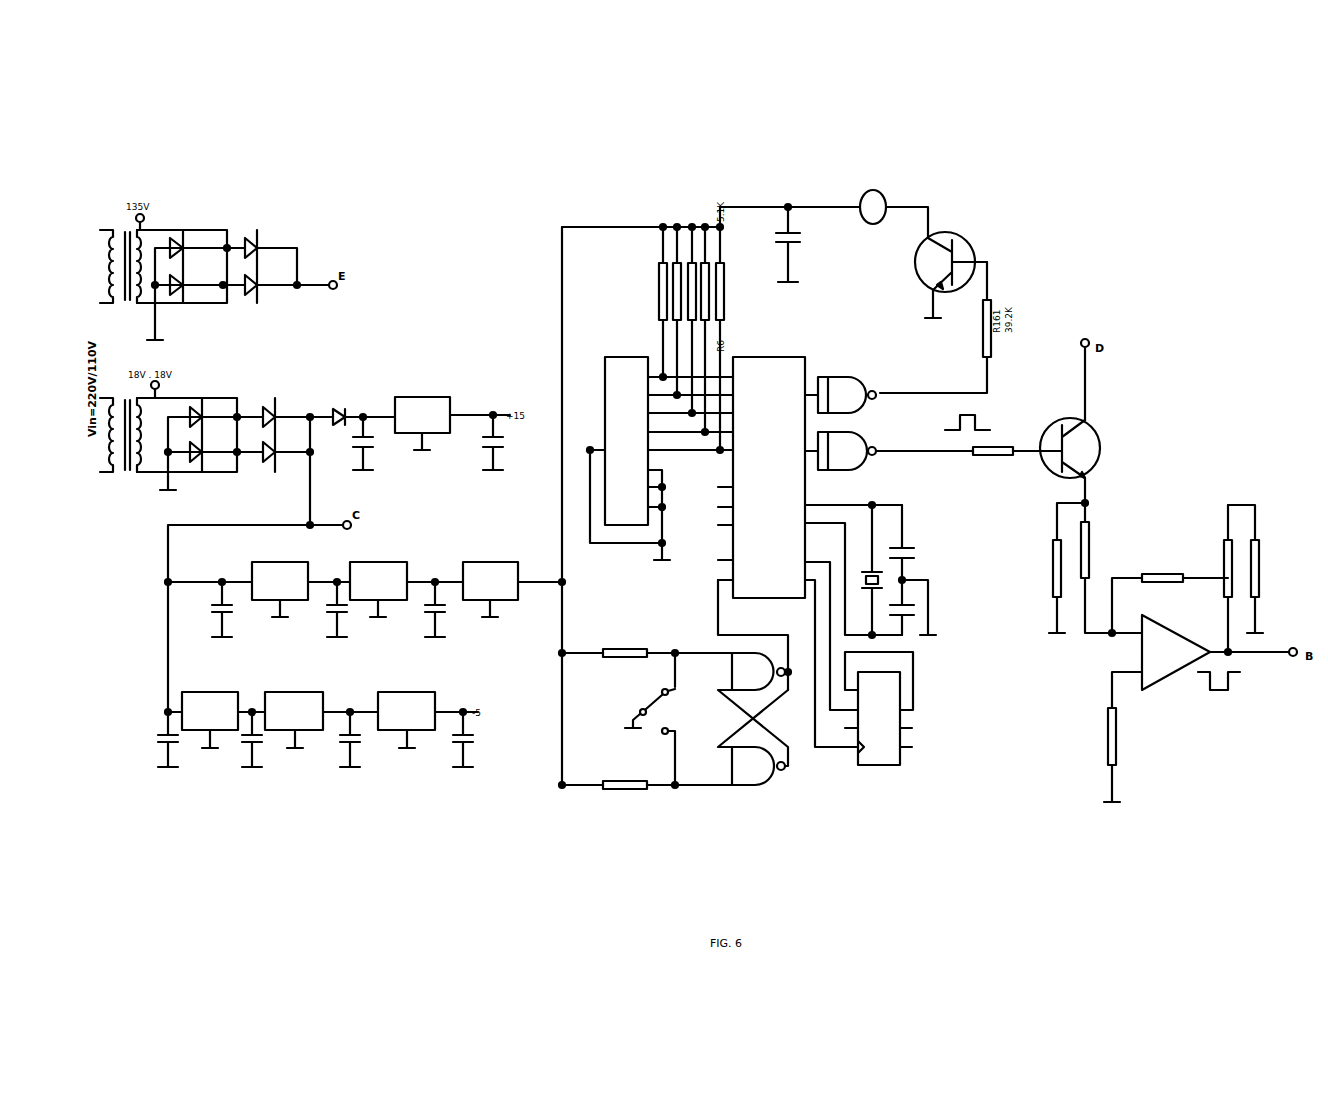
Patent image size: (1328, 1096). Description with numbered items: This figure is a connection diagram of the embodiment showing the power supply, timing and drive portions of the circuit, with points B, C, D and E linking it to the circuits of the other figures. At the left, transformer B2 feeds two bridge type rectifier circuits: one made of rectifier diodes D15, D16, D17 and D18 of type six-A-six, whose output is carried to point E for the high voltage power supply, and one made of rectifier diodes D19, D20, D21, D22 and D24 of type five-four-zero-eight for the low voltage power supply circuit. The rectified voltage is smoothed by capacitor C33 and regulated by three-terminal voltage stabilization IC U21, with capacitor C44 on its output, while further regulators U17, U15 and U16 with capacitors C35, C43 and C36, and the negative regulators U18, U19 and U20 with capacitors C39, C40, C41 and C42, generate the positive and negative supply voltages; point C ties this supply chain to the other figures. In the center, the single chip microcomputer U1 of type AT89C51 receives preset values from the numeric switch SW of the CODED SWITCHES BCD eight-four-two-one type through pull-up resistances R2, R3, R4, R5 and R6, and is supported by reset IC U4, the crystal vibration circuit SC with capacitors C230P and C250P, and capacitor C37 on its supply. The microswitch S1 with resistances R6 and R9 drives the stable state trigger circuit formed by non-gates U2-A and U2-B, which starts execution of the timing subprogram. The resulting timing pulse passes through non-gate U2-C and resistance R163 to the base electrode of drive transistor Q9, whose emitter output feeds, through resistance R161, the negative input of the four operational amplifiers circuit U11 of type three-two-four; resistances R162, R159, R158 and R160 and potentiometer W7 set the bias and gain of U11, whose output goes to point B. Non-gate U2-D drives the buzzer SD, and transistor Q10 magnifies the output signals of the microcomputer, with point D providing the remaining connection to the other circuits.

The power transformer B2 is at (119, 342).
The rectifier diode D15 is at (190, 241).
The rectifier diode D16 is at (190, 293).
The rectifier diode D17 is at (264, 241).
The rectifier diode D18 is at (264, 293).
The rectifier diode D19 is at (207, 409).
The rectifier diode D20 is at (207, 461).
The rectifier diode D21 is at (279, 409).
The rectifier diode D22 is at (279, 461).
The rectifier diode D24 is at (349, 404).
The filter capacitor 470u C33 is at (371, 443).
The filter capacitor 470u C44 is at (500, 442).
The three-terminal voltage stabilization IC U21 is at (422, 416).
The three-terminal voltage stabilization IC U17 is at (279, 582).
The voltage regulator 7808 U15 is at (378, 582).
The voltage regulator 7805 U16 is at (491, 582).
The three-terminal voltage stabilization IC U18 is at (209, 712).
The three-terminal voltage stabilization IC U19 is at (293, 712).
The three-terminal voltage stabilization IC U20 is at (406, 712).
The capacitor 470u C35 is at (229, 609).
The capacitor 470u C43 is at (344, 609).
The capacitor 470u C36 is at (442, 609).
The capacitor 470u C39 is at (175, 739).
The capacitor 470u C40 is at (259, 739).
The capacitor 470u C41 is at (357, 739).
The capacitor 470u C42 is at (470, 739).
The pull-up resistor 5.1K R2 is at (664, 289).
The pull-up resistor 5.1K R3 is at (678, 298).
The pull-up resistor 5.1K R4 is at (693, 307).
The pull-up resistor 5.1K R5 is at (706, 316).
The resistor 5.1K R6 is at (647, 644).
The resistor 5.1K R9 is at (647, 795).
The switch S1 is at (650, 719).
The capacitor 470u C37 is at (796, 244).
The buzzer SD is at (873, 216).
The transistor Q10 is at (959, 266).
The coded switches BCD 8421 SW is at (626, 448).
The microcontroller AT8051AH U1 is at (761, 477).
The crystal SC is at (868, 570).
The capacitor 30P C230P is at (918, 542).
The capacitor 30P C250P is at (918, 607).
The reset IC U4 is at (879, 718).
The double input non-gate U2-D is at (846, 387).
The double input non-gate U2-C is at (846, 459).
The double input non-gate U2-B is at (750, 665).
The double input non-gate U2-A is at (779, 775).
The resistor 10k R163 is at (969, 460).
The transistor Q9 is at (1084, 470).
The resistor 4.7K R162 is at (1052, 568).
The resistance R161 is at (1111, 577).
The resistor 10K R159 is at (1170, 594).
The potentiometer 2K W7 is at (1222, 578).
The resistor 3.6K R158 is at (1257, 569).
The four operational amplifiers circuit U11 is at (1174, 662).
The resistor 8.2K R160 is at (1123, 737).